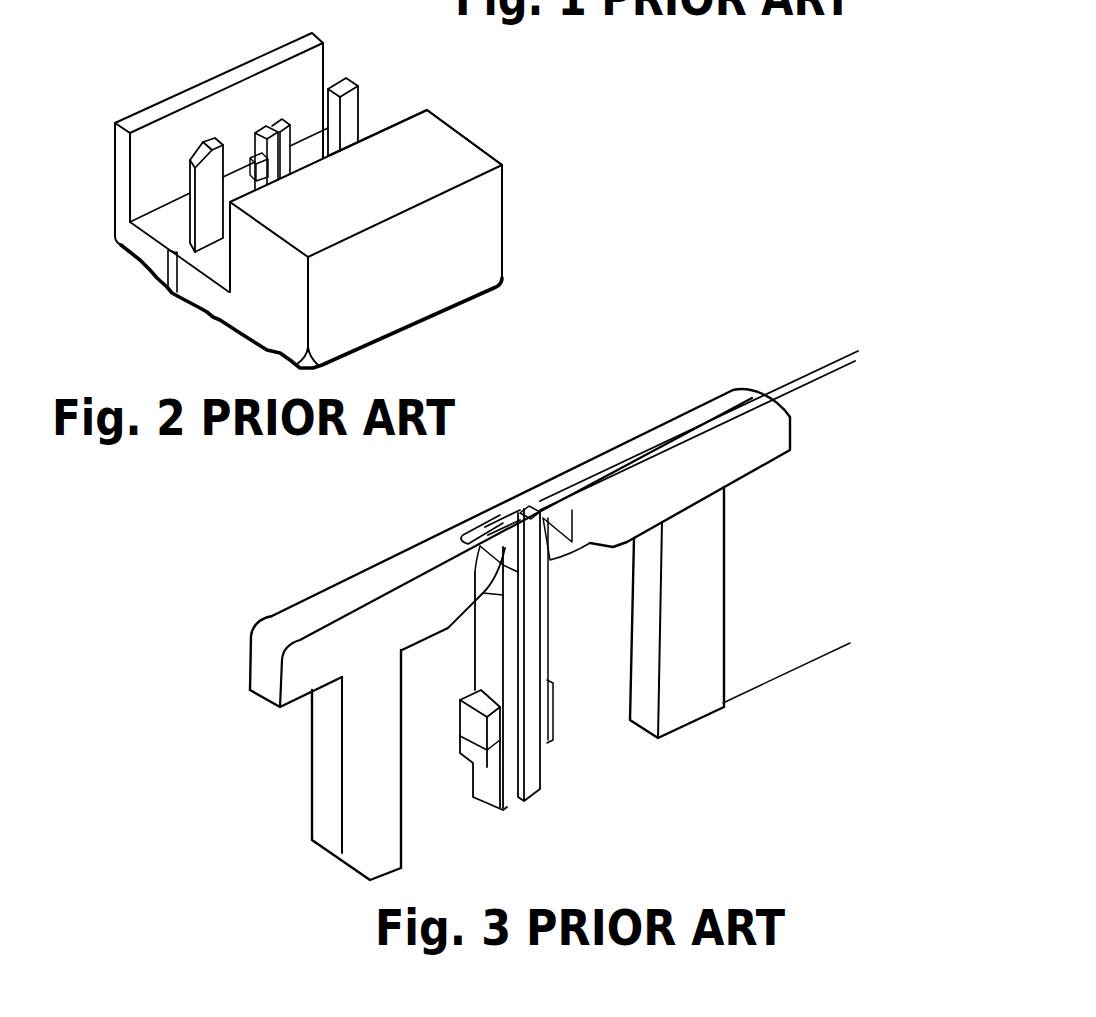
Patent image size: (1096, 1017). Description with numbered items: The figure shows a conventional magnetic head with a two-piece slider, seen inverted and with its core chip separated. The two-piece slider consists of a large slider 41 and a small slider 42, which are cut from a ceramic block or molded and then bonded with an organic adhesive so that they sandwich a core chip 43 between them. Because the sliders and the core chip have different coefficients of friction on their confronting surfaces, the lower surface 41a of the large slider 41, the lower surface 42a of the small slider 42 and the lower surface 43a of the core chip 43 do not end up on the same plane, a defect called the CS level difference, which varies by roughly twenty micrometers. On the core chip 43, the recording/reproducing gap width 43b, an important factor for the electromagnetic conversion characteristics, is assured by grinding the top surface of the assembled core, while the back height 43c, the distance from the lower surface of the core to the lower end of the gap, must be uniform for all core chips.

In FIG. 2, the large slider 41 is at (258, 325).
In FIG. 2, the lower surface of large slider 41a is at (451, 170).
In FIG. 2, the small slider 42 is at (116, 241).
In FIG. 2, the lower surface of small slider 42a is at (285, 53).
In FIG. 2, the core chip 43 is at (168, 283).
In FIG. 2, the lower surface of core chip 43a is at (208, 141).
In FIG. 3, the recording/reproducing gap width (GD) 43b is at (848, 325).
In FIG. 3, the back height of core chip 43c is at (848, 362).